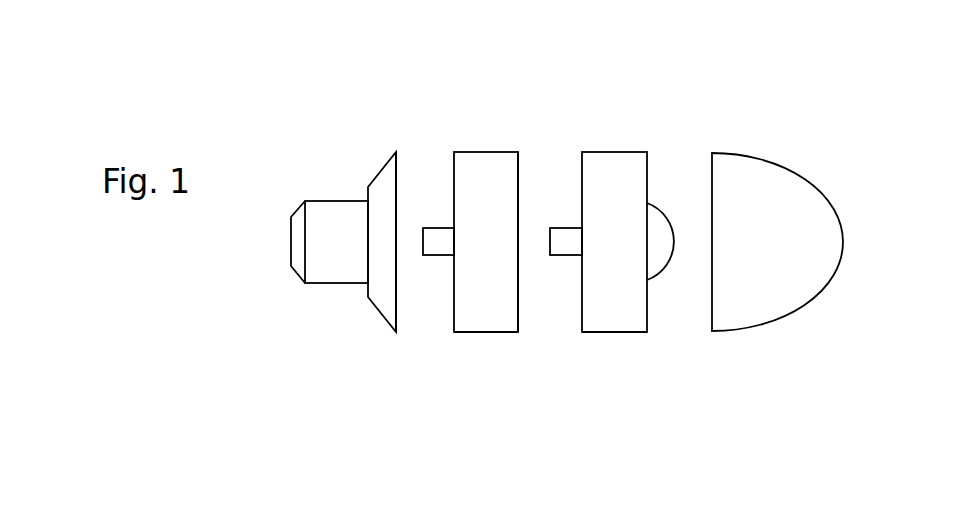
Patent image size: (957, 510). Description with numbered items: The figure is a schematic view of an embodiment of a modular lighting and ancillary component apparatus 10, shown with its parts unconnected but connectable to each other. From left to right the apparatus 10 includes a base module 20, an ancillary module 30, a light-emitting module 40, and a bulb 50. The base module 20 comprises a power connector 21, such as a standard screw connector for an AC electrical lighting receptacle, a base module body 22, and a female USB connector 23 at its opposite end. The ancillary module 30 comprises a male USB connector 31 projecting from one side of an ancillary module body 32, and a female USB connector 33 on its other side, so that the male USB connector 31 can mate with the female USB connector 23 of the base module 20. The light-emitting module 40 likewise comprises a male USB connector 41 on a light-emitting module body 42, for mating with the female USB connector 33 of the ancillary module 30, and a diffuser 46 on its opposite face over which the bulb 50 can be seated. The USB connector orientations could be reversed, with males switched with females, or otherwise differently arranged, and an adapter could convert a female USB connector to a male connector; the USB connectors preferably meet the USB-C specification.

The modular lighting and ancillary component apparatus 10 is at (243, 105).
The base module 20 is at (315, 298).
The power connector 21 is at (319, 238).
The base module body 22 is at (385, 280).
The female USB connector 23 is at (396, 238).
The ancillary module 30 is at (505, 138).
The male USB connector 31 is at (435, 228).
The ancillary module body 32 is at (483, 293).
The female USB connector 33 is at (518, 240).
The light-emitting module 40 is at (608, 137).
The male USB connector 41 is at (565, 243).
The light-emitting module body 42 is at (608, 293).
The diffuser 46 is at (662, 238).
The bulb 50 is at (777, 293).